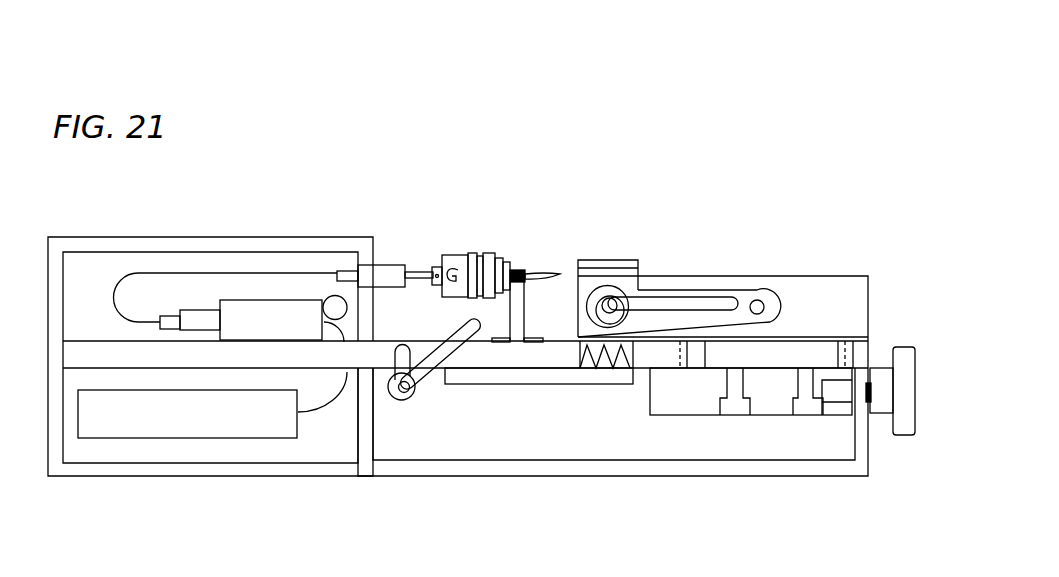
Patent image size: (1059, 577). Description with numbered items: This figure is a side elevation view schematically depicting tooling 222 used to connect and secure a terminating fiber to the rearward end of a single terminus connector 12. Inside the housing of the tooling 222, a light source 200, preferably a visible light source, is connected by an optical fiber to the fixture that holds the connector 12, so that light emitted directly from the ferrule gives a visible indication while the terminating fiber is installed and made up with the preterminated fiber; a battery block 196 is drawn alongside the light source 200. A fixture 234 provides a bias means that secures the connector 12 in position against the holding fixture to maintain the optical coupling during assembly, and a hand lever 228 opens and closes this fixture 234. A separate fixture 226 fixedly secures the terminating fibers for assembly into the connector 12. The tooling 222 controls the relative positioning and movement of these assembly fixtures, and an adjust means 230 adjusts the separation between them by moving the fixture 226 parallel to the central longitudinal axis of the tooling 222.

The tooling 222 is at (203, 218).
The light source 200 is at (233, 300).
The batteries 196 is at (272, 427).
The single terminus connector 12 is at (455, 257).
The fixture 234 is at (517, 263).
The fixture 226 is at (617, 260).
The hand lever 228 is at (404, 392).
The adjust means 230 is at (907, 352).